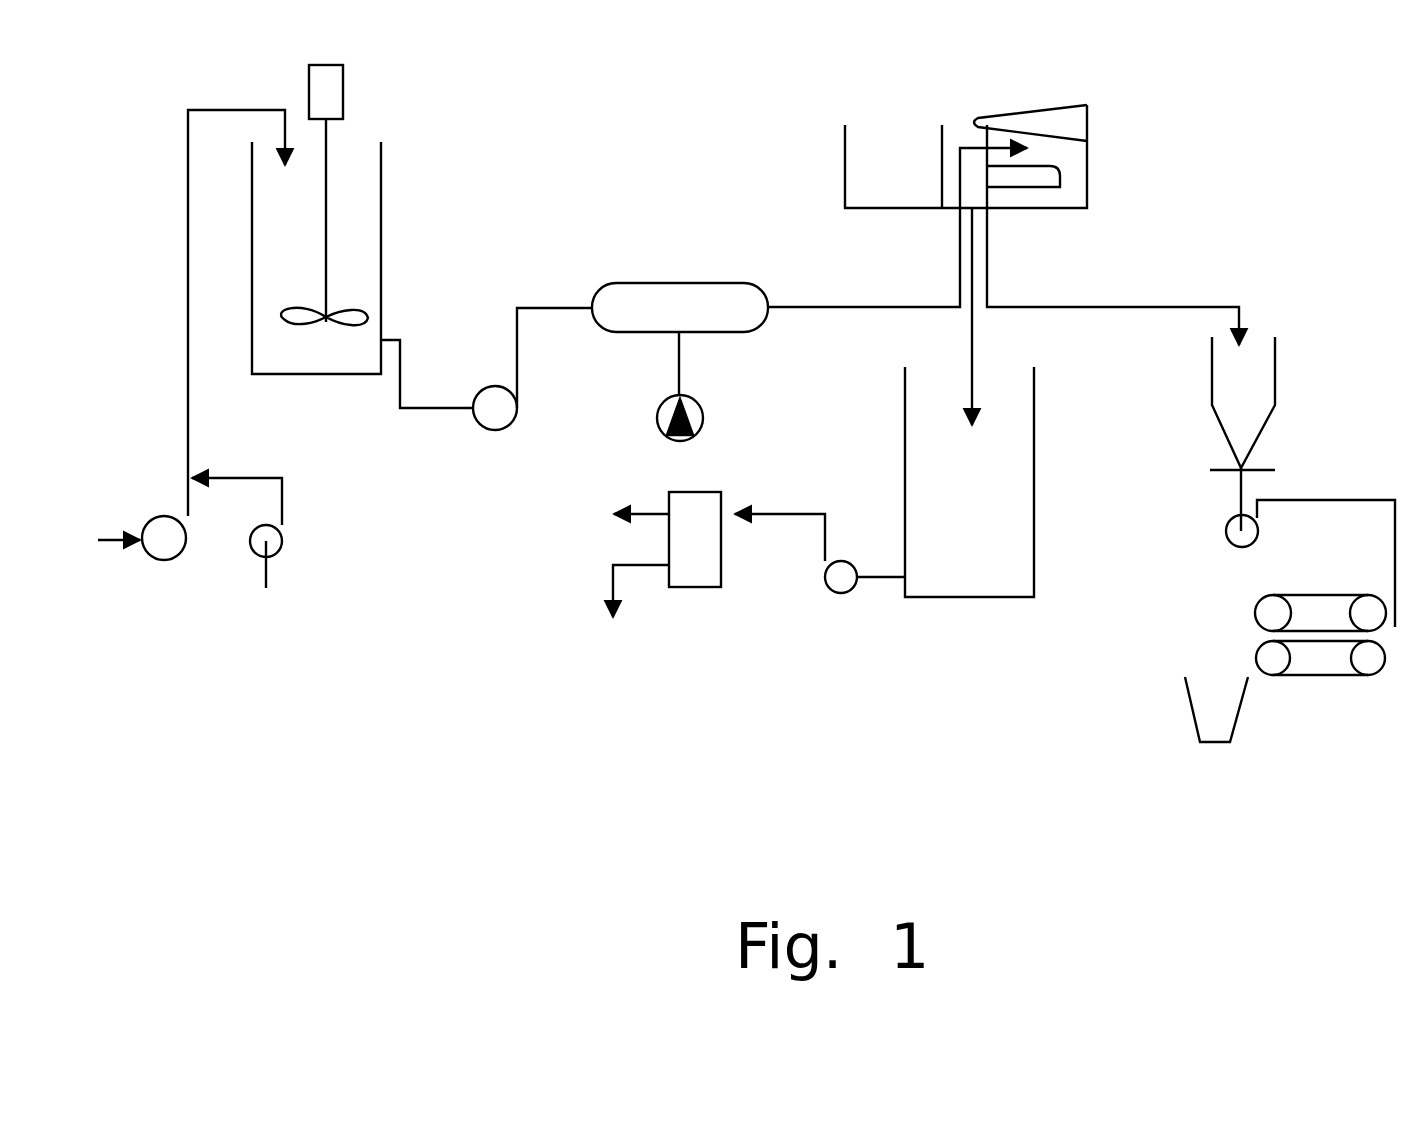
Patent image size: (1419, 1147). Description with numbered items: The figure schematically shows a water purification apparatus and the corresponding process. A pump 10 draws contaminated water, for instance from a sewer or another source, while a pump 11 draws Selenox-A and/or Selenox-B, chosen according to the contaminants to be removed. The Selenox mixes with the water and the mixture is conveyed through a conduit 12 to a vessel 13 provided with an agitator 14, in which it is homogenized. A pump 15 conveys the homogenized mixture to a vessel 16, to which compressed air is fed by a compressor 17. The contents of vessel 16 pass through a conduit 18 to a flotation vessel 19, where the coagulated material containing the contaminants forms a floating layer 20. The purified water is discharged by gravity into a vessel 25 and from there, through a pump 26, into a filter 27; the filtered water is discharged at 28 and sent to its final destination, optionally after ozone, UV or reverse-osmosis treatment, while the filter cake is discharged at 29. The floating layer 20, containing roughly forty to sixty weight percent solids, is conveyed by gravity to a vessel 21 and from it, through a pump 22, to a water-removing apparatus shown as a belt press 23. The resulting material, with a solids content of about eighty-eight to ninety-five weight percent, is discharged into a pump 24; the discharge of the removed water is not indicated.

The pump 10 is at (165, 548).
The pump 11 is at (277, 547).
The conduit 12 is at (187, 312).
The vessel 13 is at (360, 223).
The agitator 14 is at (328, 320).
The pump 15 is at (502, 418).
The vessel 16 is at (663, 295).
The compressor 17 is at (703, 417).
The conduit 18 is at (813, 303).
The flotation vessel 19 is at (1105, 152).
The floating layer 20 is at (1045, 178).
The vessel 21 is at (1253, 385).
The pump 22 is at (1232, 528).
The belt press 23 is at (1325, 675).
The pump 24 is at (1215, 713).
The vessel 25 is at (973, 545).
The pump 26 is at (837, 590).
The filter 27 is at (697, 558).
The filtered water discharge 28 is at (648, 513).
The filter cake discharge 29 is at (610, 587).